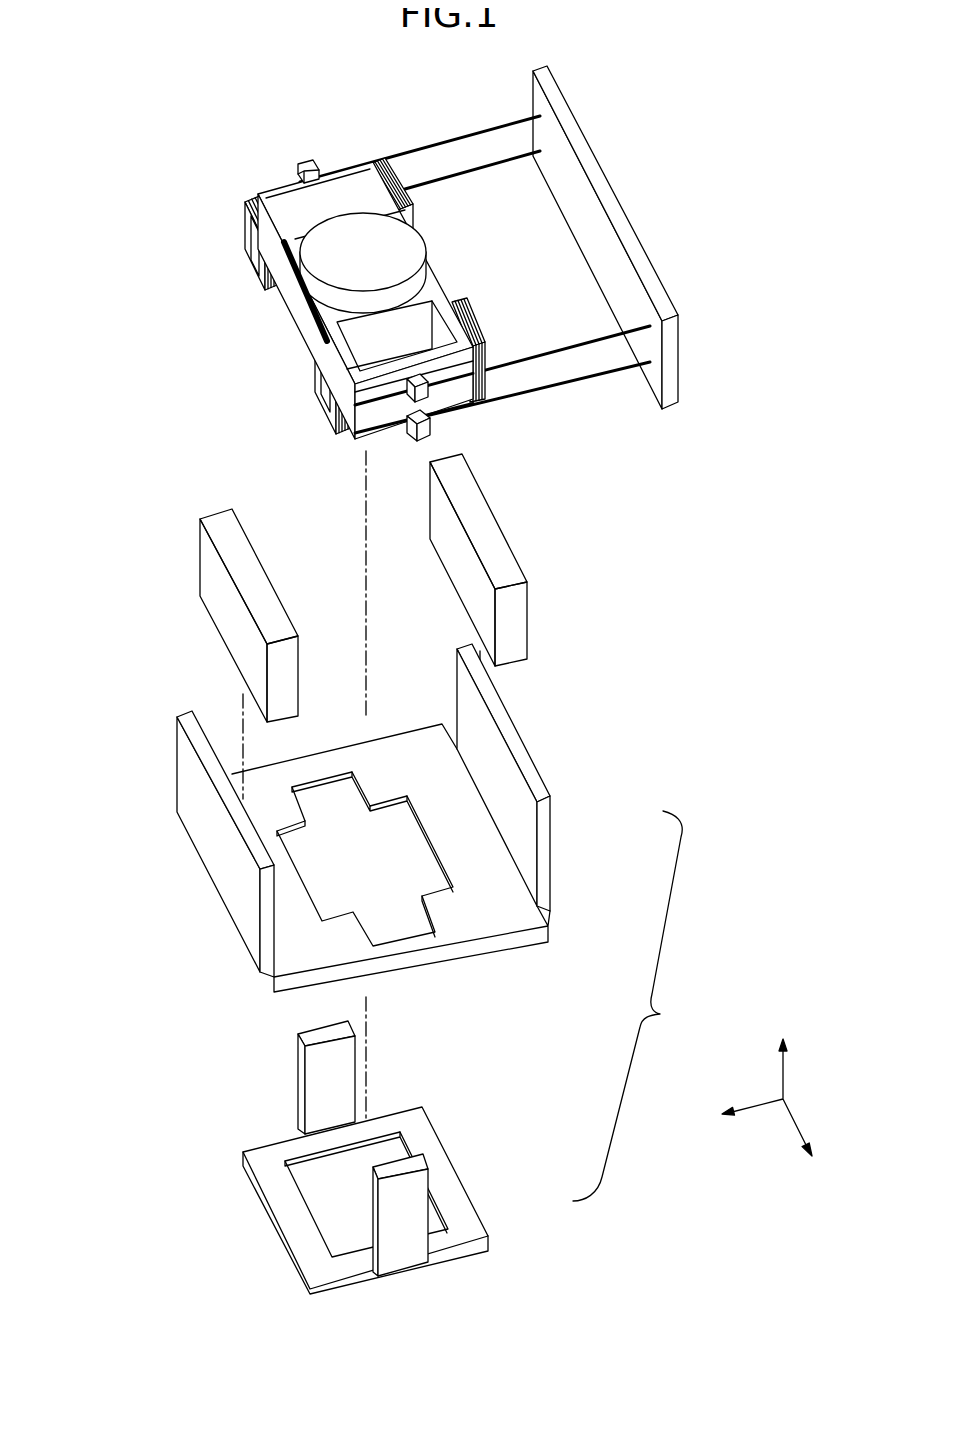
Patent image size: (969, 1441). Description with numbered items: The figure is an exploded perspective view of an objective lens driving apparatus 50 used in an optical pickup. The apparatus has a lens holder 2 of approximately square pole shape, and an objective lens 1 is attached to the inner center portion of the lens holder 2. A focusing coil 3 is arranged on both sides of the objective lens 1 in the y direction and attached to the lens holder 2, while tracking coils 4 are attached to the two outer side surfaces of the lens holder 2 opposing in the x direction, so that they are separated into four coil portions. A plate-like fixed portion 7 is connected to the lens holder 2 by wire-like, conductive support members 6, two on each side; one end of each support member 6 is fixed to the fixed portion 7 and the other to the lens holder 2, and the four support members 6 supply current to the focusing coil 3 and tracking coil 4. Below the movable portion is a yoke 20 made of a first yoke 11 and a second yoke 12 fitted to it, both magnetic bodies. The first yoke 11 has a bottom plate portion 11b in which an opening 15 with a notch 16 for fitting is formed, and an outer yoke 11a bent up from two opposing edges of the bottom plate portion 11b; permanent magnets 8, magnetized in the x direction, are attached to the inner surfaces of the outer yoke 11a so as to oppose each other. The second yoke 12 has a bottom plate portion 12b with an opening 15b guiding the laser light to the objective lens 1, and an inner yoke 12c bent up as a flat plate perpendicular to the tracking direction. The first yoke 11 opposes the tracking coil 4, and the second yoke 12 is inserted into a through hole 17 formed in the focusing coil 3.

The objective lens 1 is at (415, 248).
The lens holder 2 is at (298, 203).
The focusing coil 3 is at (300, 313).
The tracking coil 4 is at (413, 200).
The support member 6 is at (493, 129).
The fixed portion 7 is at (597, 250).
The permanent magnet 8 is at (228, 620).
The first yoke 11 is at (390, 828).
The outer yoke 11a is at (512, 802).
The bottom plate portion 11b is at (488, 923).
The second yoke 12 is at (392, 1187).
The bottom plate portion 12b is at (293, 1222).
The inner yoke 12c is at (330, 1080).
The opening 15 is at (390, 823).
The opening 15b is at (355, 1240).
The notch 16 is at (333, 803).
The through hole 17 is at (400, 342).
The yoke 20 is at (639, 1006).
The objective lens driving apparatus 50 is at (716, 577).